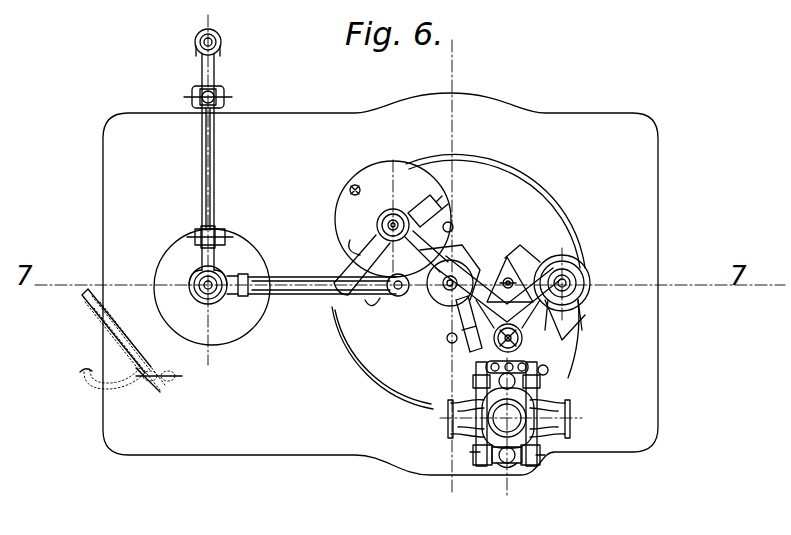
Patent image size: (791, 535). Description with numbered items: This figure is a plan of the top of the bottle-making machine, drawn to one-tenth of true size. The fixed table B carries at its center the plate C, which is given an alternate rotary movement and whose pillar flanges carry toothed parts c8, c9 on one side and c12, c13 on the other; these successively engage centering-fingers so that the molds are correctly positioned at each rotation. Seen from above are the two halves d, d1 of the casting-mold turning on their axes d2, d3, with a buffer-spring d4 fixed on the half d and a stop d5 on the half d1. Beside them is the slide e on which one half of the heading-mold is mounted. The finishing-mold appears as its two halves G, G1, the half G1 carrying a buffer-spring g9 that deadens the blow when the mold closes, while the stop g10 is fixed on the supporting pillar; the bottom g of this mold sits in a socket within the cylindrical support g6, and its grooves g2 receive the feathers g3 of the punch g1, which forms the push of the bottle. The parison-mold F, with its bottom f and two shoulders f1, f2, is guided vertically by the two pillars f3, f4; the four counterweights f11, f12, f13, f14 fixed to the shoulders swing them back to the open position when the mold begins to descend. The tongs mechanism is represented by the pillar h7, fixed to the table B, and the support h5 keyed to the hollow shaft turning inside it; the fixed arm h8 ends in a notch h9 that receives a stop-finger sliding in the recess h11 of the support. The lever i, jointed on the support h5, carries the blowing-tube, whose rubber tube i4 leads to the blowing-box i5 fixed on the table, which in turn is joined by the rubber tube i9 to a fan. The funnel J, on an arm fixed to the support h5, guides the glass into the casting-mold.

The fixed table B is at (380, 284).
The plate C is at (495, 266).
The half of the finishing-mold G is at (345, 305).
The half of the finishing-mold G1 is at (580, 262).
The parison-mold F is at (508, 418).
The funnel J is at (300, 294).
The lever i is at (216, 152).
The rubber tube i4 is at (98, 316).
The blowing-box i5 is at (141, 360).
The rubber tube i9 is at (92, 388).
The support h5 is at (202, 194).
The pillar h7 is at (209, 306).
The fixed arm h8 is at (372, 300).
The notch h9 is at (398, 296).
The recess h11 is at (226, 98).
The bottom of the mold g is at (592, 294).
The punch g1 is at (592, 285).
The grooves g2 is at (582, 305).
The feathers g3 is at (600, 308).
The cylindrical support g6 is at (590, 276).
The buffer-spring g9 is at (574, 270).
The stop g10 is at (345, 254).
The toothed part c8 is at (355, 184).
The toothed part c9 is at (454, 227).
The toothed part c12 is at (446, 340).
The toothed part c13 is at (514, 280).
The half of the casting-mold d is at (466, 268).
The half of the casting-mold d1 is at (440, 298).
The axis d2 is at (377, 222).
The axis d3 is at (524, 338).
The buffer-spring d4 is at (504, 270).
The stop d5 is at (517, 270).
The slide e is at (405, 279).
The bottom f is at (550, 438).
The shoulder f1 is at (466, 419).
The shoulder f2 is at (550, 419).
The pillar f3 is at (473, 370).
The pillar f4 is at (505, 468).
The counterweight f11 is at (476, 390).
The counterweight f12 is at (556, 386).
The counterweight f13 is at (472, 453).
The counterweight f14 is at (544, 456).